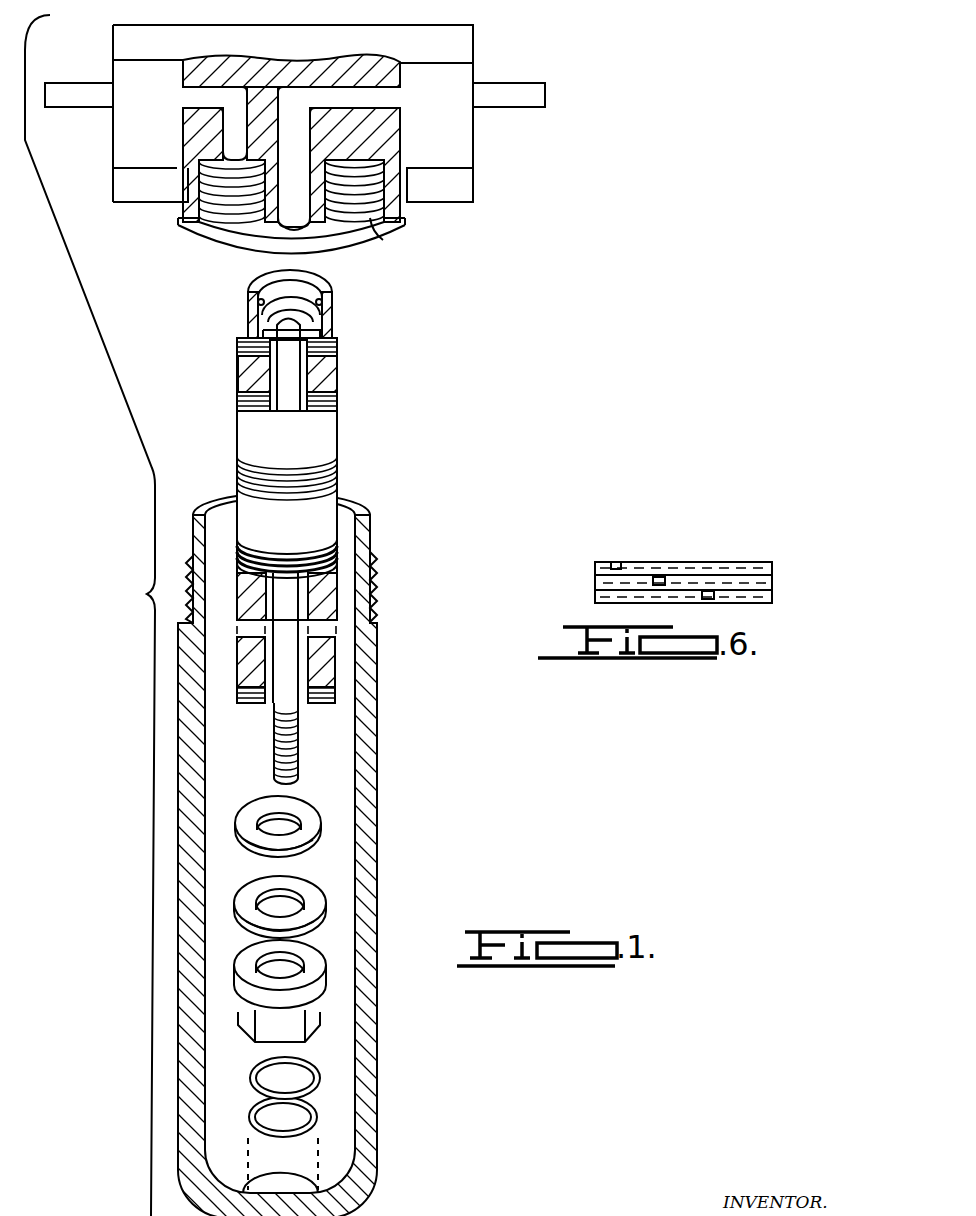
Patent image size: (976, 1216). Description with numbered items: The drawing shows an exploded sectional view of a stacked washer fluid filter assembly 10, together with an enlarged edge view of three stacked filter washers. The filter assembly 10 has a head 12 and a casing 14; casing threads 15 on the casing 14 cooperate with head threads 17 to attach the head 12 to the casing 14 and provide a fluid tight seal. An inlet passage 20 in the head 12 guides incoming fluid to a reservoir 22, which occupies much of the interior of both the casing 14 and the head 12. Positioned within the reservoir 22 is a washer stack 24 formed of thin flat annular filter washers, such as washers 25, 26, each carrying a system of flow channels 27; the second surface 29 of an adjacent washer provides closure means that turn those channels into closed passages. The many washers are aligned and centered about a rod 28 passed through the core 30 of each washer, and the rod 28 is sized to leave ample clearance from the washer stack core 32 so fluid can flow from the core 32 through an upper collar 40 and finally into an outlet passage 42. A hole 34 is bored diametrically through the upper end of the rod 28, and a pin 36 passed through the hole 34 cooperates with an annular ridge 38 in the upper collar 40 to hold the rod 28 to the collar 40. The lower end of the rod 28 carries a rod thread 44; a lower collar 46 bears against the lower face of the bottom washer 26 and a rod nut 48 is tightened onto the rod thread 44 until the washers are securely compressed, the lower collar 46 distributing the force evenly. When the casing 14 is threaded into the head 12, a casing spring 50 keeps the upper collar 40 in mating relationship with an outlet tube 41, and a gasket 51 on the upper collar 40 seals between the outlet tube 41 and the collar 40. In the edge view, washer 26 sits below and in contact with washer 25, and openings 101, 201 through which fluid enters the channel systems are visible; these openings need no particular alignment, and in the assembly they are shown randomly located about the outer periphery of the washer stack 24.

In FIG. 1, the stacked washer fluid filter assembly 10 is at (146, 598).
In FIG. 1, the head 12 is at (487, 52).
In FIG. 1, the casing 14 is at (377, 1147).
In FIG. 1, the casing threads 15 is at (375, 595).
In FIG. 1, the head threads 17 is at (395, 218).
In FIG. 1, the inlet passage 20 is at (97, 142).
In FIG. 1, the reservoir 22 is at (357, 215).
In FIG. 1, the washer stack 24 is at (345, 438).
In FIG. 1, the washer 25 is at (318, 812).
In FIG. 6, the washer 25 is at (775, 578).
In FIG. 1, the washer 26 is at (323, 913).
In FIG. 6, the washer 26 is at (775, 593).
In FIG. 1, the flow channels 27 is at (308, 840).
In FIG. 1, the rod 28 is at (288, 368).
In FIG. 1, the second surface 29 is at (250, 703).
In FIG. 1, the core 30 is at (295, 830).
In FIG. 1, the washer stack core 32 is at (307, 396).
In FIG. 1, the hole 34 is at (355, 355).
In FIG. 1, the pin 36 is at (335, 333).
In FIG. 1, the annular ridge 38 is at (340, 310).
In FIG. 1, the upper collar 40 is at (248, 332).
In FIG. 1, the outlet tube 41 is at (277, 227).
In FIG. 1, the outlet passage 42 is at (303, 145).
In FIG. 1, the rod thread 44 is at (276, 768).
In FIG. 1, the lower collar 46 is at (323, 988).
In FIG. 1, the rod nut 48 is at (322, 1028).
In FIG. 1, the casing spring 50 is at (320, 1077).
In FIG. 1, the gasket 51 is at (332, 297).
In FIG. 1, the opening 101 is at (323, 527).
In FIG. 6, the opening 101 is at (617, 562).
In FIG. 1, the opening 201 is at (330, 562).
In FIG. 6, the opening 201 is at (665, 577).